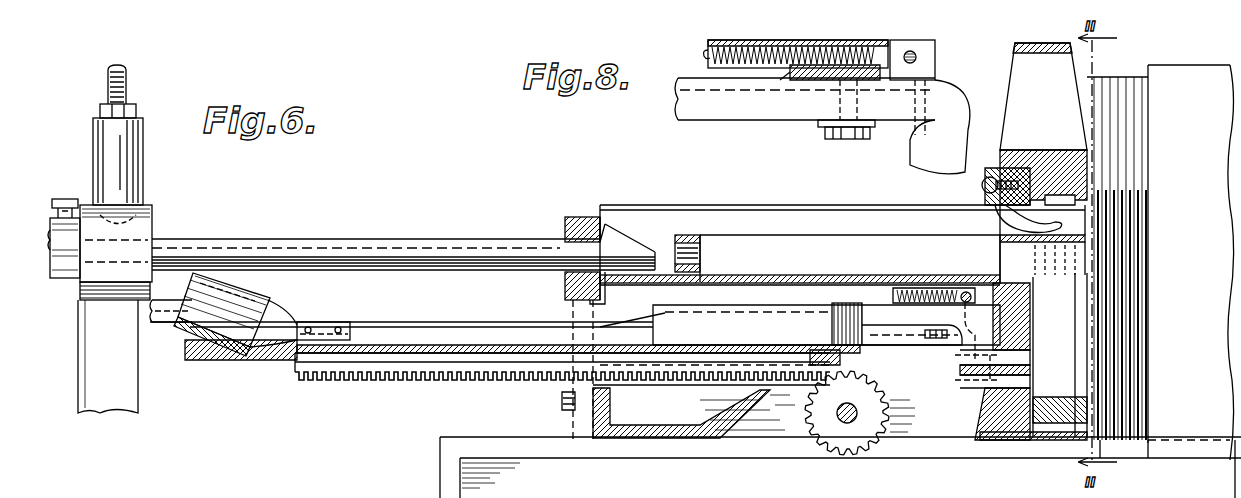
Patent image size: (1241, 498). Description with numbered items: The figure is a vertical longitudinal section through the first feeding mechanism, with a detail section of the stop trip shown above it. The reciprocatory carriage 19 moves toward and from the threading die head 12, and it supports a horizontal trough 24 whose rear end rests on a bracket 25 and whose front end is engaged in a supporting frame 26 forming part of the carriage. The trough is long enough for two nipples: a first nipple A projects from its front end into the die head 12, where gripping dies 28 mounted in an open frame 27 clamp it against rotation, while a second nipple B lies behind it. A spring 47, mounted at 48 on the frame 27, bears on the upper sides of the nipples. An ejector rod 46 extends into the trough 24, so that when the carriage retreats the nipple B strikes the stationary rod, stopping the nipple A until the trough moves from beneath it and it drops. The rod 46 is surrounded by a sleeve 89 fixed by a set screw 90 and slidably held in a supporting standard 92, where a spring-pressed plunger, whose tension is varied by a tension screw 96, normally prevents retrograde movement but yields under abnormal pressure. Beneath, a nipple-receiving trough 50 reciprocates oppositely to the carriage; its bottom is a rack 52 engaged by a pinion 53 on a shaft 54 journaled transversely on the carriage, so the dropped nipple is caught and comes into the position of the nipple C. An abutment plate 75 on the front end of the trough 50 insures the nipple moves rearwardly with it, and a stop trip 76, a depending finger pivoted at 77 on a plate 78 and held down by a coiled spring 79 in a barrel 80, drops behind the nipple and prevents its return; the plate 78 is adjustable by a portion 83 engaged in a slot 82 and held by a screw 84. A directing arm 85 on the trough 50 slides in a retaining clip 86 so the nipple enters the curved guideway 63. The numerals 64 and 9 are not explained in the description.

In FIG. 6, the tension screw 96 is at (108, 80).
In FIG. 6, the sleeve 89 is at (152, 228).
In FIG. 6, the set screw 90 is at (66, 199).
In FIG. 6, the supporting standard 92 is at (84, 334).
In FIG. 6, the ejector rod 46 is at (393, 242).
In FIG. 6, the bracket 25 is at (572, 305).
In FIG. 6, the trough 24 is at (632, 208).
In FIG. 6, the nipple A is at (924, 245).
In FIG. 6, the nipple B is at (790, 232).
In FIG. 6, the nipple C is at (739, 326).
In FIG. 6, the nipple-receiving trough 50 is at (445, 328).
In FIG. 6, the curved guideway 63 is at (185, 333).
In FIG. 6, the retaining clip 86 is at (243, 292).
In FIG. 6, the shaft end 64 is at (171, 300).
In FIG. 6, the directing arm 85 is at (300, 318).
In FIG. 6, the rack 52 is at (525, 380).
In FIG. 6, the reciprocatory carriage 19 is at (711, 411).
In FIG. 6, the pinion 53 is at (848, 455).
In FIG. 6, the shaft 54 is at (838, 422).
In FIG. 6, the barrel 80 is at (895, 292).
In FIG. 8, the barrel 80 is at (714, 45).
In FIG. 6, the pivot 77 is at (965, 292).
In FIG. 8, the pivot 77 is at (912, 50).
In FIG. 6, the slot 82 is at (862, 312).
In FIG. 8, the slot 82 is at (752, 120).
In FIG. 6, the abutment plate 75 is at (870, 337).
In FIG. 6, the screw 84 is at (945, 340).
In FIG. 8, the screw 84 is at (848, 140).
In FIG. 6, the stop trip 76 is at (977, 341).
In FIG. 8, the stop trip 76 is at (940, 127).
In FIG. 6, the gripping dies 28 is at (1075, 317).
In FIG. 6, the threading die head 12 is at (1161, 281).
In FIG. 6, the open frame 27 is at (1040, 160).
In FIG. 6, the supporting frame 26 is at (1005, 175).
In FIG. 6, the spring mounting 48 is at (982, 186).
In FIG. 6, the spring 47 is at (1028, 222).
In FIG. 8, the coiled spring 79 is at (790, 42).
In FIG. 8, the plate 78 is at (820, 80).
In FIG. 8, the portion 83 is at (788, 78).
In FIG. 8, the section line 9 is at (706, 50).